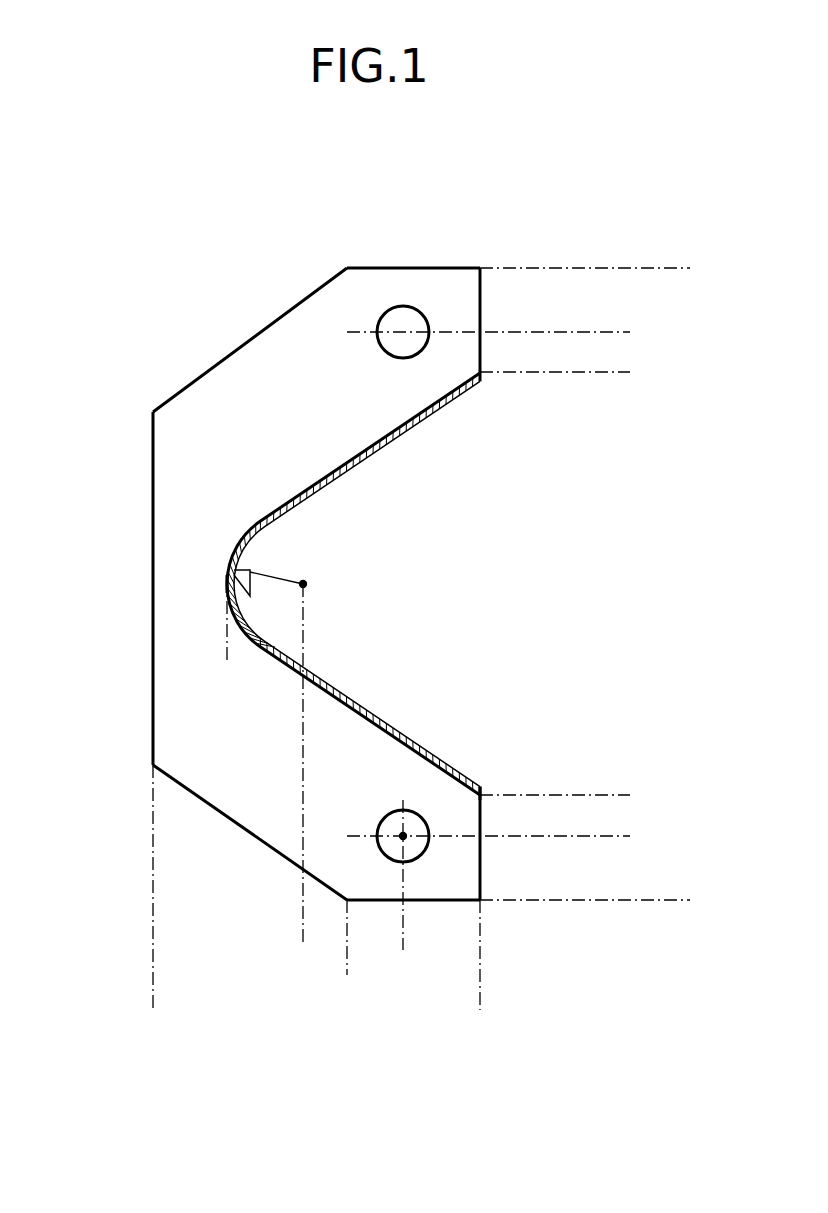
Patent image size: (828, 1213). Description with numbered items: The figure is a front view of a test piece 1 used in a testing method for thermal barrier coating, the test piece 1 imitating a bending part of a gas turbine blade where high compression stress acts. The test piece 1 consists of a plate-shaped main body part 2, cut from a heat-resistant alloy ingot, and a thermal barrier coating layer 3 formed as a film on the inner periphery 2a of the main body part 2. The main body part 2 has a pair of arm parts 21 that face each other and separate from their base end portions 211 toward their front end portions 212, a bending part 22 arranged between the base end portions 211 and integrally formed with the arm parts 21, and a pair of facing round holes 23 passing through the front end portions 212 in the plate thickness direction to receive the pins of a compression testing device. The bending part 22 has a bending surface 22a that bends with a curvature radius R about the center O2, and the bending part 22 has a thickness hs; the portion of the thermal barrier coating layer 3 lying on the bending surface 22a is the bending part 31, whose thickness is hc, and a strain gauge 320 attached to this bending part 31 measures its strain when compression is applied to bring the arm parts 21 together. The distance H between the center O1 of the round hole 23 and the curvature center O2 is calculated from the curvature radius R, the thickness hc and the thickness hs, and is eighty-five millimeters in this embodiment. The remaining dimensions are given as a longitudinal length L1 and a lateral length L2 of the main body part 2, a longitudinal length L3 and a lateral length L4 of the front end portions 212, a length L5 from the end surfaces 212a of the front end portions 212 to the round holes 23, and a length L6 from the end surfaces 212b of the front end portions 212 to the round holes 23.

The test piece 1 is at (315, 537).
The main body part 2 is at (315, 573).
The inner periphery 2a is at (380, 726).
The arm parts 21 is at (280, 336).
The base end portions 211 is at (235, 468).
The front end portions 212 is at (456, 280).
The end surfaces 212a is at (372, 905).
The end surfaces 212b is at (484, 812).
The bending part 22 is at (205, 558).
The bending surface 22a is at (262, 613).
The round holes 23 is at (395, 325).
The thermal barrier coating (TBC) layer 3 is at (462, 383).
The bending part 31 is at (245, 573).
The strain gauge 320 is at (237, 588).
The center of the round holes O1 is at (404, 832).
The center of the curvature radius O2 is at (308, 584).
The curvature radius R is at (292, 578).
The distance H is at (403, 933).
The thickness of the TBC layer hc is at (400, 387).
The thickness of the bending part hs is at (258, 648).
The length of a longitudinal direction of the main body part L1 is at (658, 268).
The length of a lateral direction of the main body part L2 is at (153, 994).
The length of a longitudinal direction of the front end portions L3 is at (593, 900).
The length of a lateral direction of the front end portions L4 is at (480, 960).
The length from end surfaces 212a to the round holes L5 is at (528, 900).
The length from end surfaces 212b to the round holes L6 is at (403, 932).